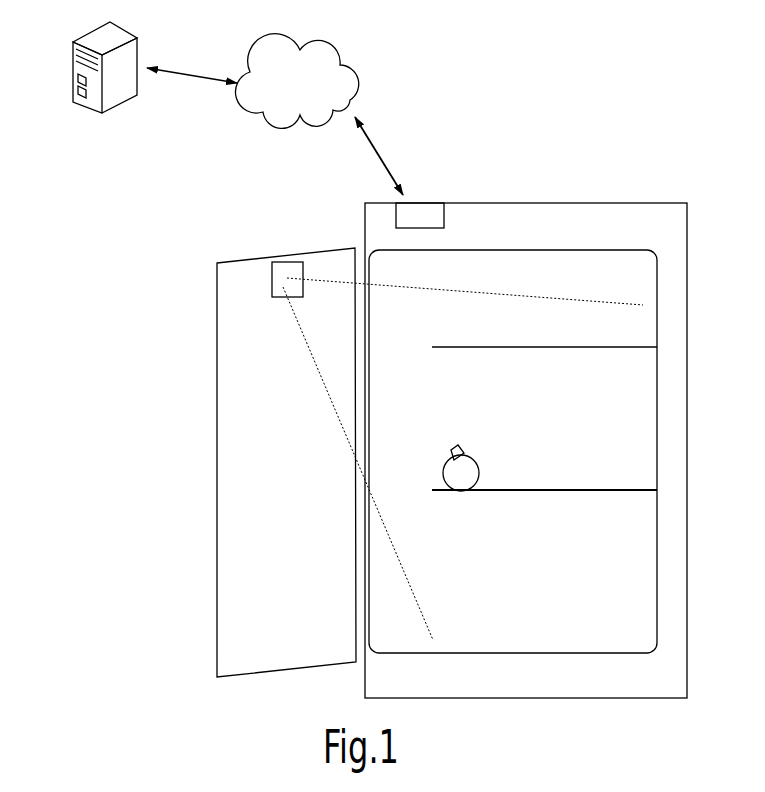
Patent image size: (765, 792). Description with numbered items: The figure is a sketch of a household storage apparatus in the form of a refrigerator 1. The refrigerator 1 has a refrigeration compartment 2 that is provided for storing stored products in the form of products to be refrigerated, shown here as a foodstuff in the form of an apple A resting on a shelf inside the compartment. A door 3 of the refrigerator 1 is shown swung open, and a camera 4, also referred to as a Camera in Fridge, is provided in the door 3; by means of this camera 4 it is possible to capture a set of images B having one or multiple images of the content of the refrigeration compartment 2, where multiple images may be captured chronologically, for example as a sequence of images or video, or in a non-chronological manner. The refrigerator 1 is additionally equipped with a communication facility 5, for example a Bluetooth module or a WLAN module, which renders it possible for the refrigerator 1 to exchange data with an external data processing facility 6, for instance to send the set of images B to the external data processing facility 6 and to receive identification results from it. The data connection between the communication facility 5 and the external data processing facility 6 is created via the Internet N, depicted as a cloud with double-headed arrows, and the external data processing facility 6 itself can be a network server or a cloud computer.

The refrigerator 1 is at (537, 203).
The refrigeration compartment 2 is at (657, 423).
The door 3 is at (227, 437).
The camera 4 is at (283, 262).
The communication facility 5 is at (420, 210).
The external data processing facility 6 is at (95, 113).
The Internet N is at (343, 63).
The apple A is at (478, 463).
The set of images B is at (373, 133).